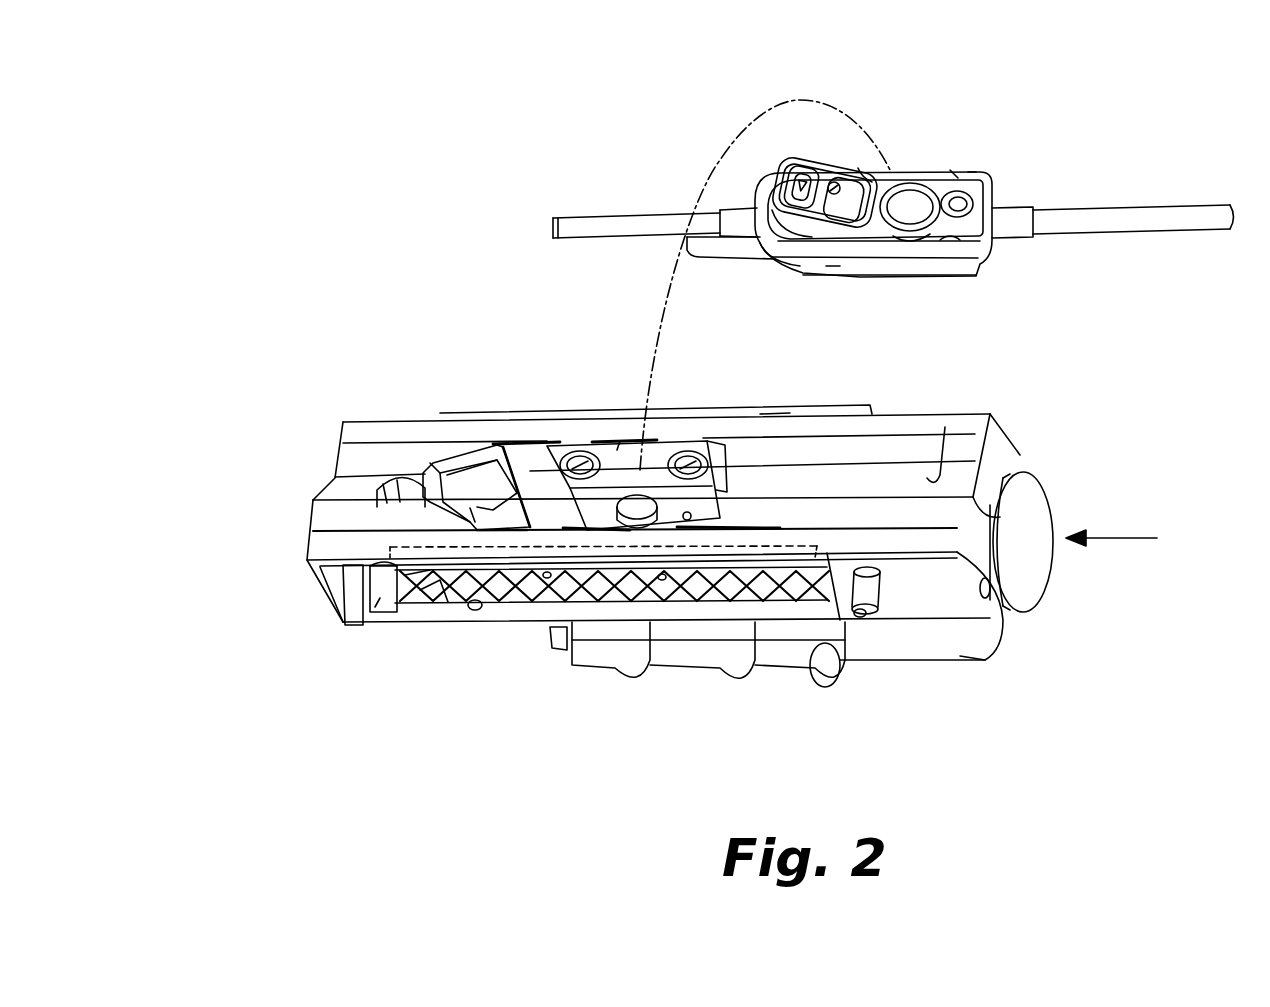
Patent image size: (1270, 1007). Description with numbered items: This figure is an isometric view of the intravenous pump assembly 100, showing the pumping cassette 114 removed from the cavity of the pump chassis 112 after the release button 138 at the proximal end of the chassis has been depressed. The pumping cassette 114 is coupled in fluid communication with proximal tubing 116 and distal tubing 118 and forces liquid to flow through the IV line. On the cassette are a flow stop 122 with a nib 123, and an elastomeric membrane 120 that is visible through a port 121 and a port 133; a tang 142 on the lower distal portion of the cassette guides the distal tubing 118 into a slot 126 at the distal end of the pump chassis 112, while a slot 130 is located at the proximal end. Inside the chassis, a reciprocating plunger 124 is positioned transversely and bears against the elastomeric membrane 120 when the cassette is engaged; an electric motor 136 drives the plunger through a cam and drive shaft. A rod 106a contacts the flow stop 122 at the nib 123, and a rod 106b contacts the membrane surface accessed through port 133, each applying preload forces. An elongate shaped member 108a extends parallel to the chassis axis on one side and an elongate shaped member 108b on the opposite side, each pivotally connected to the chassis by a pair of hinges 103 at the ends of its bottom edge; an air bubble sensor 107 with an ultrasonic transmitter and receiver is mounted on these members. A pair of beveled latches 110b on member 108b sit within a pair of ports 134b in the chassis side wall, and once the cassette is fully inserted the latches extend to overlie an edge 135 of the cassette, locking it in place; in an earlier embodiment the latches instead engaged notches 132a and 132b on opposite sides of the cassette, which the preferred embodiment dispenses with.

The intravenous pump assembly 100 is at (303, 650).
The hinges 103 is at (449, 602).
The rod 106a is at (605, 548).
The rod 106b is at (700, 545).
The air bubble sensor 107 is at (375, 608).
The elongate shaped member 108a is at (435, 600).
The elongate shaped member 108b is at (767, 413).
The latches 110b is at (577, 450).
The pump chassis 112 is at (1022, 445).
The pumping cassette 114 is at (1128, 132).
The proximal tubing 116 is at (1186, 205).
The distal tubing 118 is at (617, 216).
The elastomeric membrane 120 is at (905, 204).
The port 121 is at (907, 234).
The flow stop 122 is at (818, 218).
The nib 123 is at (862, 198).
The reciprocating plunger 124 is at (627, 494).
The slot 126 is at (372, 490).
The slot 130 is at (937, 478).
The notches 132a is at (860, 170).
The notches 132b is at (830, 268).
The port 133 is at (968, 200).
The ports 134b is at (555, 447).
The edge 135 is at (950, 170).
The electric motor 136 is at (685, 670).
The release button 138 is at (1024, 572).
The tang 142 is at (697, 251).